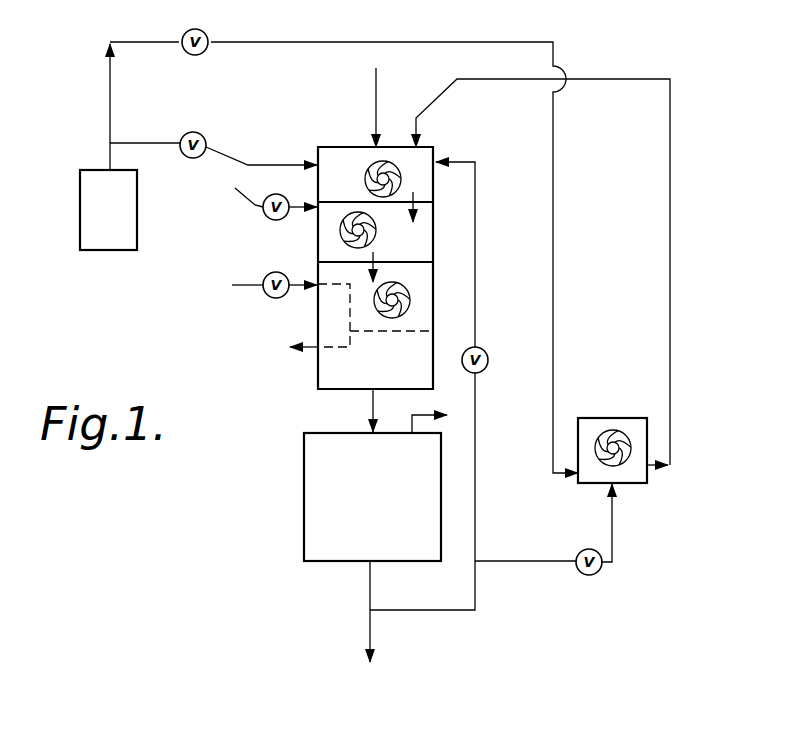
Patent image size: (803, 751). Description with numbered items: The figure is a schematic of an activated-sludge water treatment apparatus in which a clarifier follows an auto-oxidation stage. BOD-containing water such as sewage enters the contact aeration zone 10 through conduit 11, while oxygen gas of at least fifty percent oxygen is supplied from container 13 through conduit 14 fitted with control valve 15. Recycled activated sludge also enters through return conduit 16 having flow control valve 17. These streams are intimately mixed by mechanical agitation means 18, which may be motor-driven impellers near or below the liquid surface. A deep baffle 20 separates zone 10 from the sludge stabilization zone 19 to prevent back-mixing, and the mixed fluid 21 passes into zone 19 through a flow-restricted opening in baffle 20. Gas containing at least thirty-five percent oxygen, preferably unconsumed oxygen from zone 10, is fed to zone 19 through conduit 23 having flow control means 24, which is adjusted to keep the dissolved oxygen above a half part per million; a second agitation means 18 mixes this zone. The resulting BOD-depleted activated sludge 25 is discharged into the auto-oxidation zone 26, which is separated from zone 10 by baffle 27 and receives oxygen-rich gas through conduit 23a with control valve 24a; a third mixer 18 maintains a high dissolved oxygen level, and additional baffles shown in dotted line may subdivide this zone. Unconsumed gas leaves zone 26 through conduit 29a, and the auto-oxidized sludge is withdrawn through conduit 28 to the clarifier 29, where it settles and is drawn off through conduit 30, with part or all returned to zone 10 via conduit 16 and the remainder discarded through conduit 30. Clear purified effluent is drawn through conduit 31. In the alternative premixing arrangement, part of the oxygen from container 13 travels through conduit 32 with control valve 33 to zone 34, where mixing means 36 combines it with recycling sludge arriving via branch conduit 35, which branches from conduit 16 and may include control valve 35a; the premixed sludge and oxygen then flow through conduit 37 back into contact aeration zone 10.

The contact aeration zone 10 is at (436, 151).
The conduit 11 is at (372, 90).
The container 13 is at (92, 219).
The conduit 14 is at (139, 142).
The control valve 15 is at (199, 132).
The return conduit 16 is at (475, 587).
The flow control valve 17 is at (489, 360).
The mechanical agitation means 18 is at (365, 176).
The sludge stabilization zone 19 is at (420, 227).
The baffle 20 is at (333, 202).
The mixed fluid 21 is at (418, 197).
The conduit 23 is at (243, 200).
The conduit 23a is at (240, 286).
The flow control means 24 is at (279, 220).
The control valve 24a is at (276, 298).
The BOD-depleted activated sludge 25 is at (378, 256).
The auto-oxidation zone 26 is at (328, 315).
The baffle 27 is at (422, 263).
The conduit 28 is at (370, 412).
The clarifier 29 is at (320, 492).
The conduit 29a is at (307, 349).
The conduit 30 is at (370, 590).
The conduit 31 is at (422, 415).
The conduit 32 is at (110, 108).
The control valve 33 is at (201, 54).
The zone 34 is at (630, 477).
The conduit 35 is at (520, 563).
The control valve 35a is at (595, 577).
The mixing means 36 is at (602, 463).
The conduit 37 is at (670, 197).